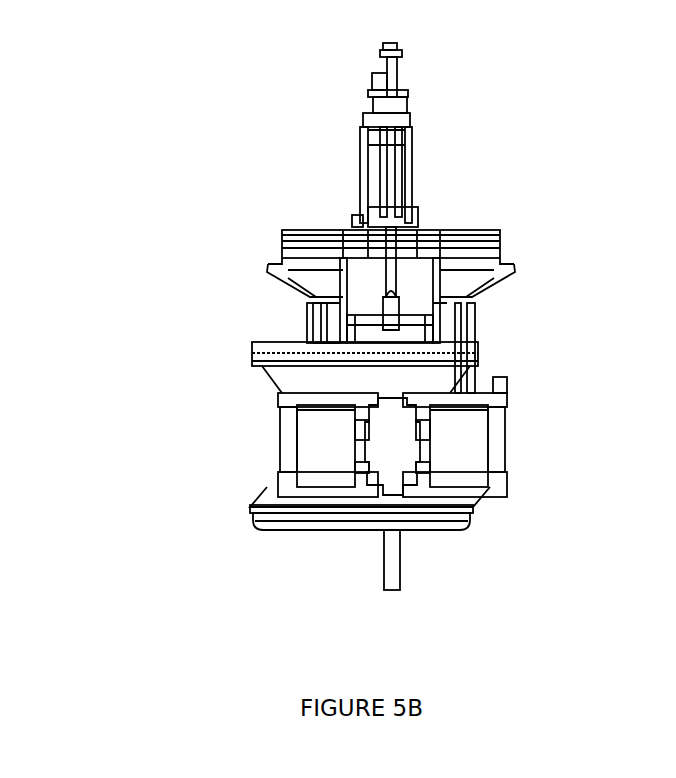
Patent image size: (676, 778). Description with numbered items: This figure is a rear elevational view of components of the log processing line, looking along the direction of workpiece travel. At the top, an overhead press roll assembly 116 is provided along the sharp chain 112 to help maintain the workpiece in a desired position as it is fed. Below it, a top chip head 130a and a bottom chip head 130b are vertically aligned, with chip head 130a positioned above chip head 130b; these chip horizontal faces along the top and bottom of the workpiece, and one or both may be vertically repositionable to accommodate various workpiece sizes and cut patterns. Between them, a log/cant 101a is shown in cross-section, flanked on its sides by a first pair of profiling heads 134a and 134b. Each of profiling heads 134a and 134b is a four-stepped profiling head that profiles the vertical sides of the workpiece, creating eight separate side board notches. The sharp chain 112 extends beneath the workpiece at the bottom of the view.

The overhead press roll assembly 116 is at (455, 207).
The top chip head 130a is at (282, 360).
The profiling head 134b is at (287, 403).
The profiling head 134a is at (493, 403).
The log/cant 101a is at (384, 450).
The bottom chip head 130b is at (287, 512).
The sharp chain 112 is at (385, 563).